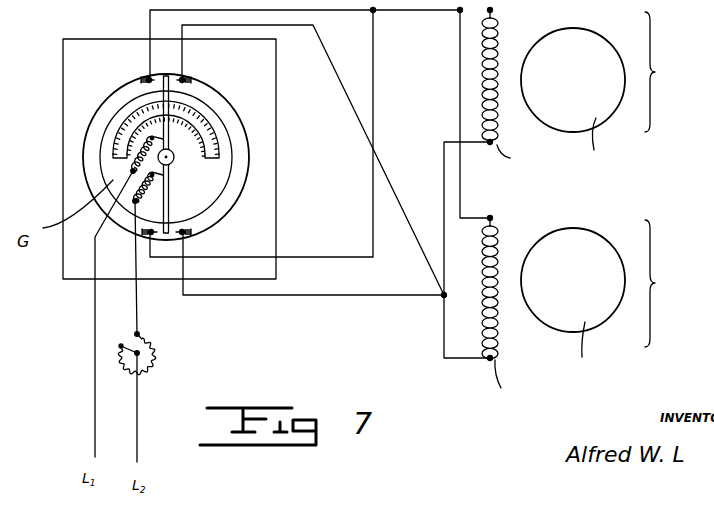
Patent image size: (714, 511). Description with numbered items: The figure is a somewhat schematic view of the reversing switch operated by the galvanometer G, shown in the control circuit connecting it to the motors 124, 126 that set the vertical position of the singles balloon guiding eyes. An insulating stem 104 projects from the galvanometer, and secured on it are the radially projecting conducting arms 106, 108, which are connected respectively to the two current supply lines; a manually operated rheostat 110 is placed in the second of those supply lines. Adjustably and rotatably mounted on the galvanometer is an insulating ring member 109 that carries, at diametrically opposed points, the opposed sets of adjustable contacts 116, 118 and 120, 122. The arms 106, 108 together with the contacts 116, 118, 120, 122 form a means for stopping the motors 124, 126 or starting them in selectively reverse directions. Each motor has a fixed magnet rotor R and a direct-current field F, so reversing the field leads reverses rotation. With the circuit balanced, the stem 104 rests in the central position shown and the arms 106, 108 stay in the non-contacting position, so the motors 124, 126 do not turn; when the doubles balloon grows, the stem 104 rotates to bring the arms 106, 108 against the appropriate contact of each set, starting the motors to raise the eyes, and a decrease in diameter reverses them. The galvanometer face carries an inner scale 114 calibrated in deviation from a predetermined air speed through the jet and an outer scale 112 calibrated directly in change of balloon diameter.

The insulating stem 104 is at (176, 161).
The conducting arm 106 is at (172, 90).
The conducting arm 108 is at (172, 202).
The insulating ring member 109 is at (90, 165).
The manually operated rheostat 110 is at (157, 355).
The outer scale 112 is at (207, 122).
The inner scale 114 is at (209, 150).
The adjustable contact 116 is at (190, 80).
The adjustable contact 118 is at (147, 77).
The adjustable contact 120 is at (148, 238).
The adjustable contact 122 is at (190, 234).
The motor 124 is at (590, 90).
The motor 126 is at (588, 312).